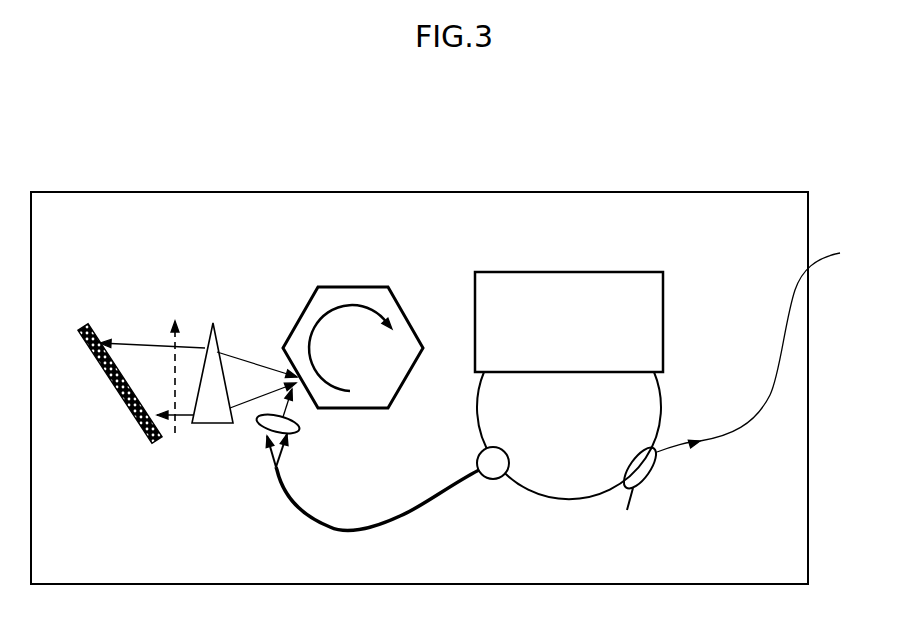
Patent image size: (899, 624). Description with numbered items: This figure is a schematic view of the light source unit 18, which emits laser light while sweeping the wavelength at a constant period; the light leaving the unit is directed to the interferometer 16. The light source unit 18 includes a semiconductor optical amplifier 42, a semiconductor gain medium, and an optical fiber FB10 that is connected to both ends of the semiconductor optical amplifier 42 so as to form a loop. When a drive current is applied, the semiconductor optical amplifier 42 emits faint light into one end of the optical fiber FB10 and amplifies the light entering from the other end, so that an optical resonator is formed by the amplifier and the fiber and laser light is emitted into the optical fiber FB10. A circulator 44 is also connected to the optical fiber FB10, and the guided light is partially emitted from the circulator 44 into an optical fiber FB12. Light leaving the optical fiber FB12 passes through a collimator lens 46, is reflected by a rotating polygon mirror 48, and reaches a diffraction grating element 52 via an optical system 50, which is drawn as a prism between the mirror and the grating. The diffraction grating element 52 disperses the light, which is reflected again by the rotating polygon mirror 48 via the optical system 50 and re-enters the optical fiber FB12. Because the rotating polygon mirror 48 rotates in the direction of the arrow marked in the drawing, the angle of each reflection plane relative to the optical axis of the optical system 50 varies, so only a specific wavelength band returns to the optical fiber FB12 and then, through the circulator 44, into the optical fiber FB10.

The light source unit 18 is at (558, 192).
The interferometer 16 is at (763, 284).
The semiconductor optical amplifier 42 is at (567, 272).
The circulator 44 is at (495, 481).
The collimator lens 46 is at (297, 430).
The rotating polygon mirror 48 is at (354, 287).
The optical system 50 is at (215, 337).
The diffraction grating element 52 is at (130, 402).
The optical fiber FB10 is at (662, 400).
The optical fiber FB12 is at (282, 512).